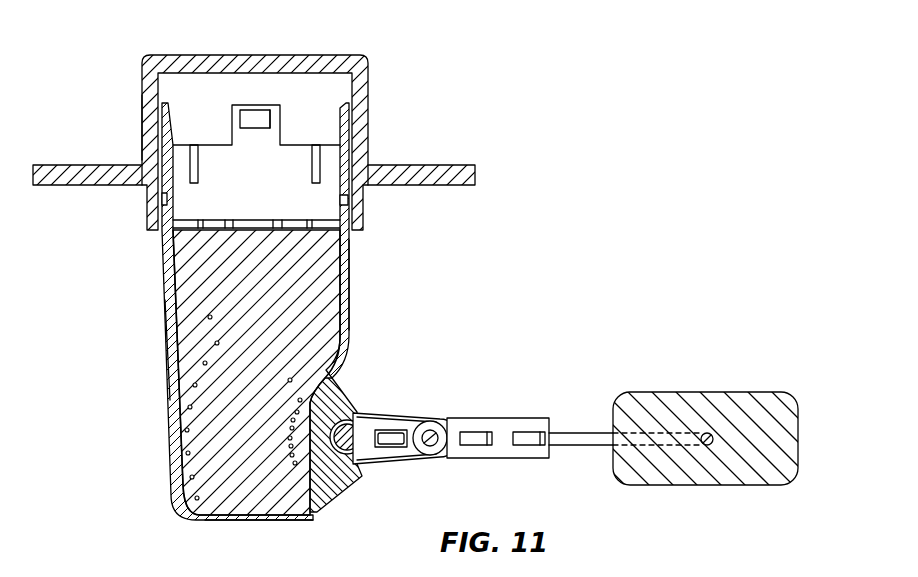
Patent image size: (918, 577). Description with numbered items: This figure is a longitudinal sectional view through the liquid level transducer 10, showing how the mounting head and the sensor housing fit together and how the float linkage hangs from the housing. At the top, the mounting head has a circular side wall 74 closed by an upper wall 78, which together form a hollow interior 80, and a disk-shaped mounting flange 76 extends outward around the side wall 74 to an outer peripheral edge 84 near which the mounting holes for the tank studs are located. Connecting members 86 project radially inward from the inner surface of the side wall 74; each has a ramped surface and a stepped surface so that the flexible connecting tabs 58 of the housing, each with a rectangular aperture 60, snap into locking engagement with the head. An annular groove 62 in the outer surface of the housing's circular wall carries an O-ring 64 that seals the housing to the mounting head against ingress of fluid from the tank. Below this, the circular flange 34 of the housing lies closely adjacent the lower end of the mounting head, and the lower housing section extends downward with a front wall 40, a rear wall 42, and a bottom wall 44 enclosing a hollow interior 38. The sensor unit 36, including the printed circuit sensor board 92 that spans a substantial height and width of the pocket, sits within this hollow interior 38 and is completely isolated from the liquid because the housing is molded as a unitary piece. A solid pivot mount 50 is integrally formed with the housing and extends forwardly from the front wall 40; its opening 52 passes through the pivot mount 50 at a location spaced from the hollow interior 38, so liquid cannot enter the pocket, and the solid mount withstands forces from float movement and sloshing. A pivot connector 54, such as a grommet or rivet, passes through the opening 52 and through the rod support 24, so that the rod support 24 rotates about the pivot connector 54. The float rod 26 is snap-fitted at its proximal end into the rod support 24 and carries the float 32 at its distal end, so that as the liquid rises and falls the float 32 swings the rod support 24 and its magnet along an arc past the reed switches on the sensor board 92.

The liquid level transducer 10 is at (550, 94).
The rod support 24 is at (500, 418).
The float rod 26 is at (567, 428).
The float 32 is at (707, 392).
The circular flange 34 is at (148, 222).
The sensor unit 36 is at (322, 267).
The hollow interior 38 is at (184, 284).
The front wall 40 is at (353, 298).
The rear wall 42 is at (168, 388).
The bottom wall 44 is at (260, 522).
The pivot mount 50 is at (350, 402).
The opening 52 is at (353, 410).
The pivot connector 54 is at (356, 466).
The connecting tabs 58 is at (232, 122).
The aperture 60 is at (253, 119).
The annular groove 62 is at (342, 197).
The O-ring 64 is at (363, 200).
The circular side wall 74 is at (140, 113).
The mounting flange 76 is at (93, 165).
The upper wall 78 is at (162, 55).
The hollow interior 80 is at (332, 92).
The outer peripheral edge 84 is at (475, 173).
The connecting members 86 is at (270, 121).
The sensor board 92 is at (185, 355).